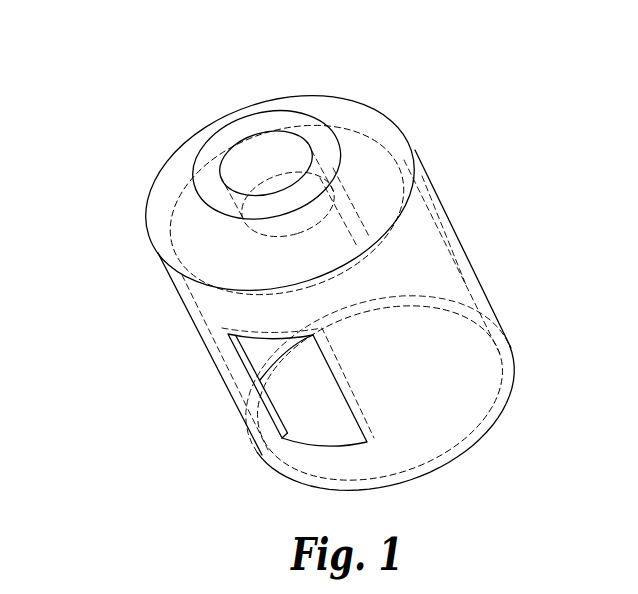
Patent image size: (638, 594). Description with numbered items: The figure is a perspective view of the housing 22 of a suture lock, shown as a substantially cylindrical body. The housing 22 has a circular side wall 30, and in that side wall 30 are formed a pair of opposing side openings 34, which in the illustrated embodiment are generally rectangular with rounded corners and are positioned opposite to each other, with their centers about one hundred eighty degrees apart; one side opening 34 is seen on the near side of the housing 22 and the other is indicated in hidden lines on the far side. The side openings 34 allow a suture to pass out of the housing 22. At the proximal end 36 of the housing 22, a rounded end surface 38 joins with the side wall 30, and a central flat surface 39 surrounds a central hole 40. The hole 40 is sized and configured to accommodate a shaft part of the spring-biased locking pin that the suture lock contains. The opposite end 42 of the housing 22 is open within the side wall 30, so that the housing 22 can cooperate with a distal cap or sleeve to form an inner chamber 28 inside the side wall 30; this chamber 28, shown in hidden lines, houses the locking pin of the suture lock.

The housing 22 is at (466, 148).
The inner chamber 28 is at (460, 393).
The circular side wall 30 is at (485, 285).
The side openings 34 is at (302, 408).
The proximal end 36 is at (217, 130).
The rounded end surface 38 is at (167, 199).
The central flat surface 39 is at (273, 124).
The central hole 40 is at (240, 187).
The open end 42 is at (430, 473).